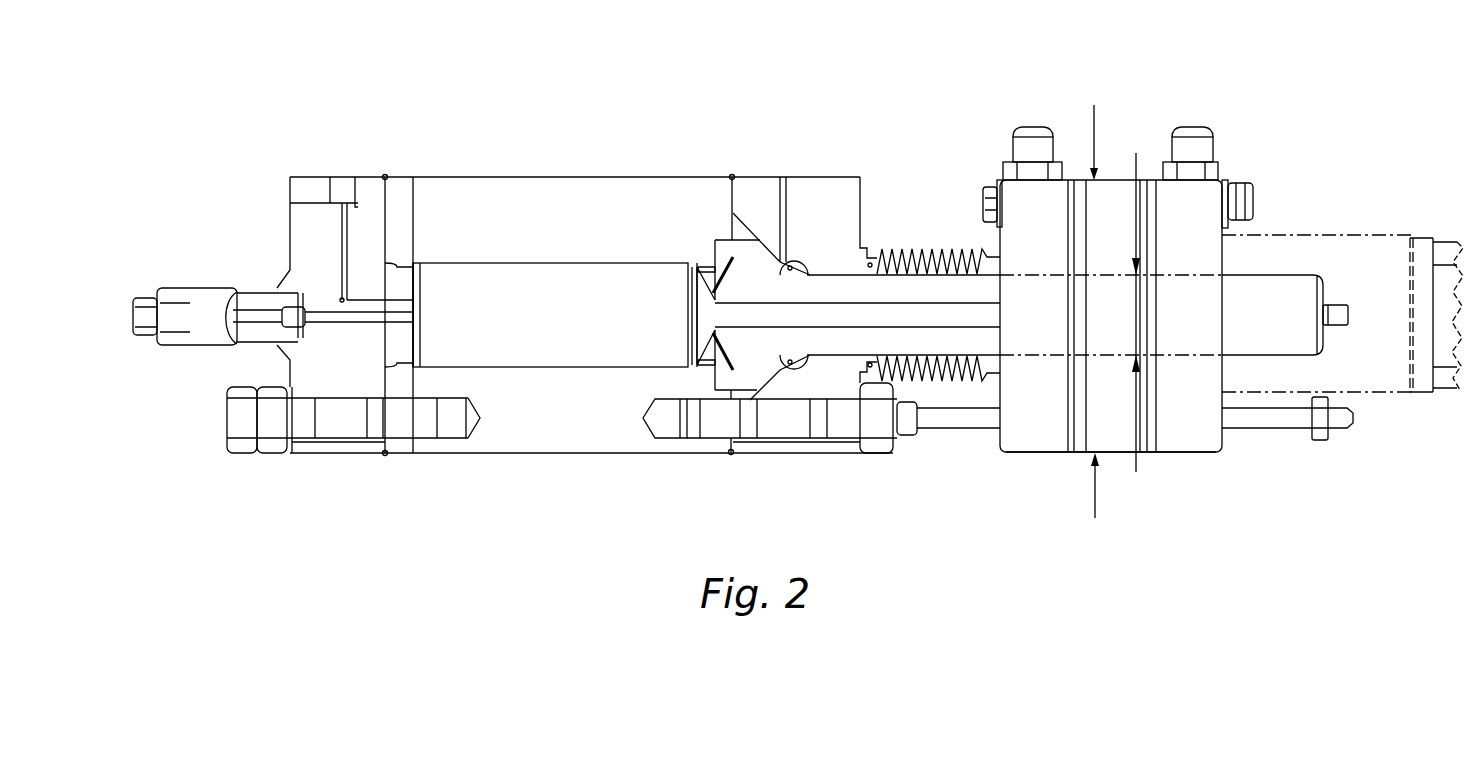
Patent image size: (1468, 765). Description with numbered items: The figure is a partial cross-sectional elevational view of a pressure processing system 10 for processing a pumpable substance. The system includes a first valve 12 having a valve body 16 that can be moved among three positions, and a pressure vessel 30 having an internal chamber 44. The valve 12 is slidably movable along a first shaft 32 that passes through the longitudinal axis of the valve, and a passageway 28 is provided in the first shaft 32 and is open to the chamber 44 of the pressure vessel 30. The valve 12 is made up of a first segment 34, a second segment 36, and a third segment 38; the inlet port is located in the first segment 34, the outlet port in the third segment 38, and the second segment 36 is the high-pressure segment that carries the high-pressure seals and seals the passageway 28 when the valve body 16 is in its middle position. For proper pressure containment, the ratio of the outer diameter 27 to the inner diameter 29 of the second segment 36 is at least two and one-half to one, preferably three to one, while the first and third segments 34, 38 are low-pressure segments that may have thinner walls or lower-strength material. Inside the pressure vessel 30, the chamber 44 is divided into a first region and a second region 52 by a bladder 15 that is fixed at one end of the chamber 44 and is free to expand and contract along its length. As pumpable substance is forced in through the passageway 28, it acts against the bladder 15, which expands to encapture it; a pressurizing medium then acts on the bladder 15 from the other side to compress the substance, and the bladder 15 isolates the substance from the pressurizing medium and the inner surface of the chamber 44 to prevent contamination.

The pressure processing system 10 is at (1240, 114).
The first valve 12 is at (989, 168).
The bladder 15 is at (693, 352).
The valve body 16 is at (1197, 455).
The outer diameter 27 is at (1094, 499).
The passageway 28 is at (910, 320).
The inner diameter 29 is at (1135, 330).
The pressure vessel 30 is at (423, 177).
The first shaft 32 is at (1283, 288).
The first segment 34 is at (1223, 187).
The second segment 36 is at (1108, 195).
The third segment 38 is at (1033, 217).
The chamber 44 is at (545, 280).
The second region 52 is at (443, 297).